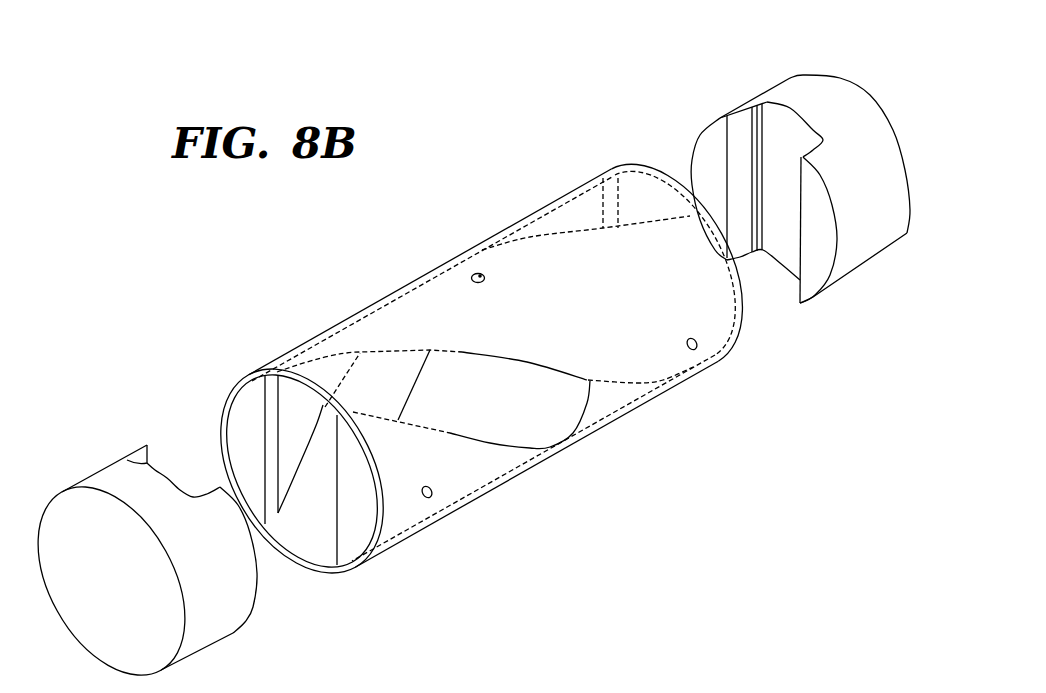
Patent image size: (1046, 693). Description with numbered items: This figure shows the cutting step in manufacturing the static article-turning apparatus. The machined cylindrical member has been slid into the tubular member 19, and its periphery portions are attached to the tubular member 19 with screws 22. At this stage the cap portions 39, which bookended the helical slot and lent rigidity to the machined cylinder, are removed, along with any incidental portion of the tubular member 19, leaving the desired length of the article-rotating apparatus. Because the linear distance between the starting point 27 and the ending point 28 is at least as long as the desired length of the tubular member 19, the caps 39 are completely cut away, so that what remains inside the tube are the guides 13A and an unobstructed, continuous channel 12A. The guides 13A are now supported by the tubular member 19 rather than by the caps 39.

The tubular member 19 is at (376, 300).
The continuous channel 12A is at (317, 520).
The guides 13A is at (250, 401).
The screws 22 is at (478, 272).
The starting point 27 is at (166, 476).
The ending point 28 is at (790, 110).
The cap portions 39 is at (108, 462).